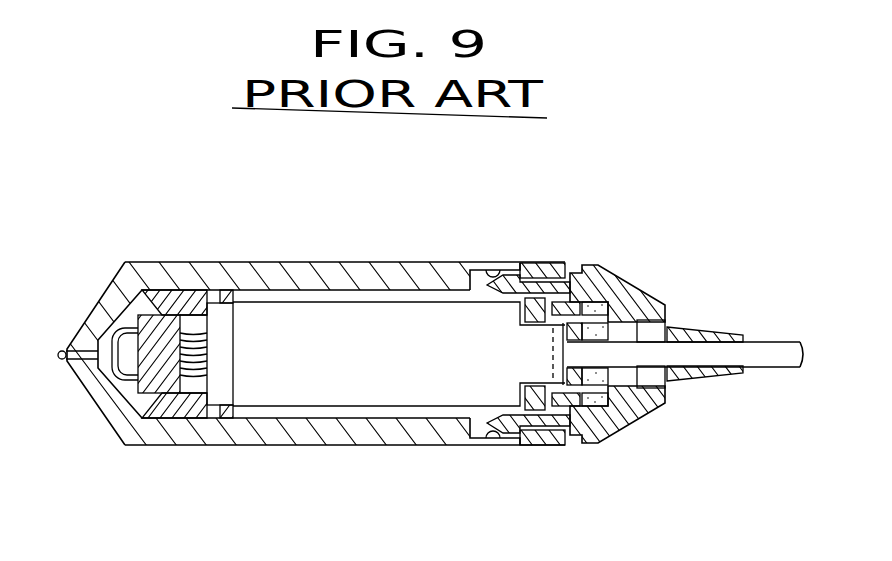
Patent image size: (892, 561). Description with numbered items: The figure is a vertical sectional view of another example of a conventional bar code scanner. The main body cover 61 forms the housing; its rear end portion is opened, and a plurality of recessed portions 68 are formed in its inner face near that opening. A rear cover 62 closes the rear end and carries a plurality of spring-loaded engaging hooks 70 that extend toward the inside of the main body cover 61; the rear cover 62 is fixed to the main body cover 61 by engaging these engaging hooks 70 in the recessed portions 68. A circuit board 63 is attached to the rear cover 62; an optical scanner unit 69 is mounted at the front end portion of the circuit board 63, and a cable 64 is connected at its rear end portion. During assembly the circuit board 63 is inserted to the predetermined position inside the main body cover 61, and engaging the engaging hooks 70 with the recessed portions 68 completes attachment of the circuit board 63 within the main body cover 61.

The main body cover 61 is at (338, 268).
The rear cover 62 is at (618, 287).
The circuit board 63 is at (335, 382).
The cable 64 is at (753, 348).
The recessed portions 68 is at (487, 266).
The optical scanner unit 69 is at (153, 318).
The engaging hooks 70 is at (498, 288).